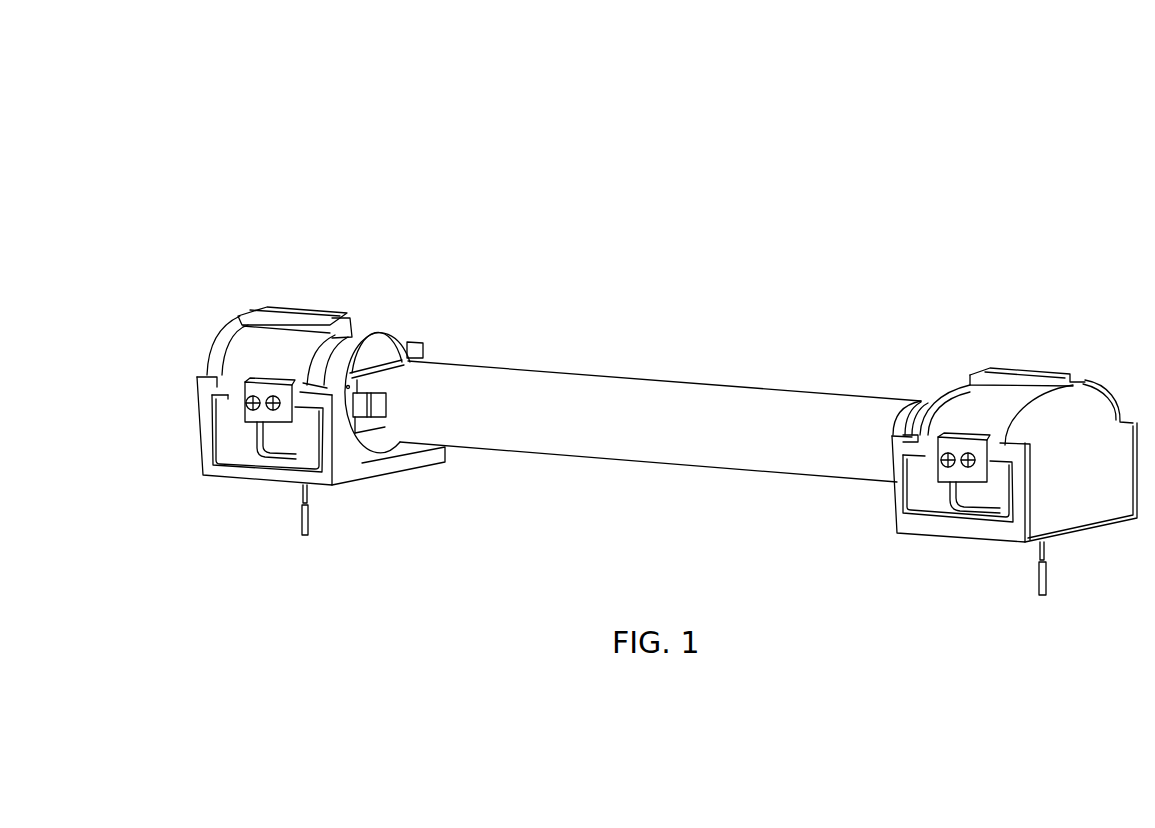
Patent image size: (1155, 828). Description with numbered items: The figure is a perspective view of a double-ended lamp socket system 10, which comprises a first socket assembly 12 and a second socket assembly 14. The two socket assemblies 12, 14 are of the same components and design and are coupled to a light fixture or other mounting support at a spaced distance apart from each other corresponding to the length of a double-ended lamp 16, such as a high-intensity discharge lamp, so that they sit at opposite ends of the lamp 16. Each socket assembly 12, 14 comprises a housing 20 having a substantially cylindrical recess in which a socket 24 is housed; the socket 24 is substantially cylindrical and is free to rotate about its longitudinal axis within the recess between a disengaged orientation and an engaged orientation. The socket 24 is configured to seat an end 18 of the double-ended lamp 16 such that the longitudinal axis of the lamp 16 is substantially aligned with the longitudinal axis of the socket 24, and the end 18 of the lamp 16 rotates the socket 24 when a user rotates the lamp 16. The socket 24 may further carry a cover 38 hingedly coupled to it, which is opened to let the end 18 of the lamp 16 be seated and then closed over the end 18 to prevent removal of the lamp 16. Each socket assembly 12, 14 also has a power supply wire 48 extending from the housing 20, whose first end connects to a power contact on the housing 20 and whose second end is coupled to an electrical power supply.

The double-ended lamp socket system 10 is at (314, 136).
The first socket assembly 12 is at (364, 258).
The second socket assembly 14 is at (966, 355).
The double-ended lamp 16 is at (608, 388).
The end of the double-ended lamp 18 is at (392, 398).
The housing 20 is at (250, 352).
The socket 24 is at (382, 447).
The cover 38 is at (375, 356).
The power supply wire 48 is at (300, 515).